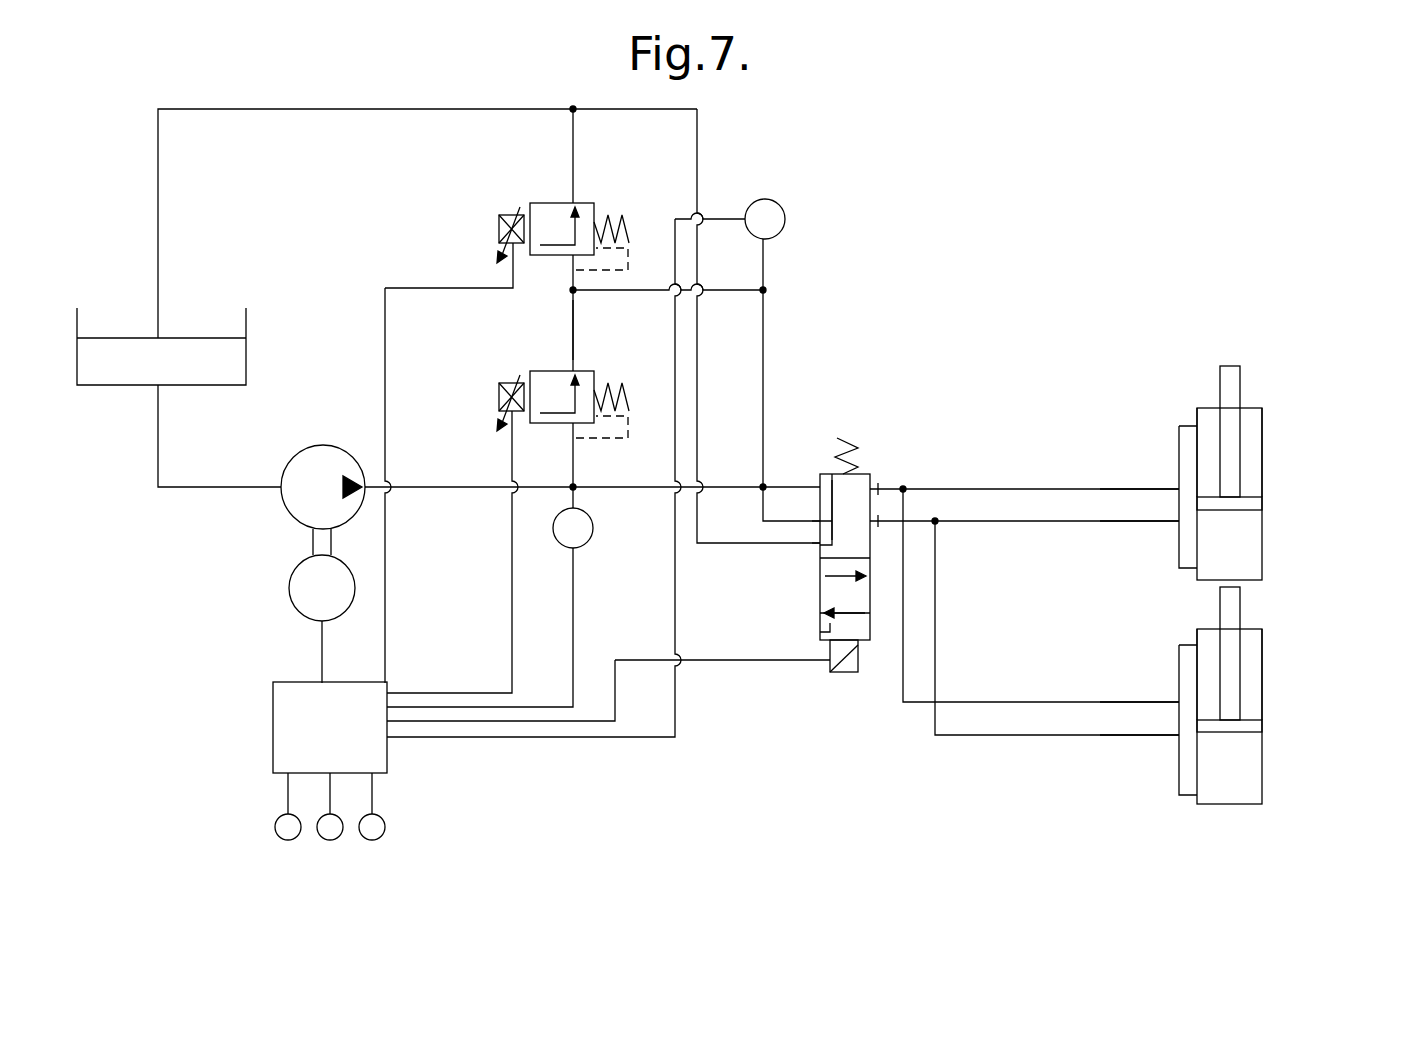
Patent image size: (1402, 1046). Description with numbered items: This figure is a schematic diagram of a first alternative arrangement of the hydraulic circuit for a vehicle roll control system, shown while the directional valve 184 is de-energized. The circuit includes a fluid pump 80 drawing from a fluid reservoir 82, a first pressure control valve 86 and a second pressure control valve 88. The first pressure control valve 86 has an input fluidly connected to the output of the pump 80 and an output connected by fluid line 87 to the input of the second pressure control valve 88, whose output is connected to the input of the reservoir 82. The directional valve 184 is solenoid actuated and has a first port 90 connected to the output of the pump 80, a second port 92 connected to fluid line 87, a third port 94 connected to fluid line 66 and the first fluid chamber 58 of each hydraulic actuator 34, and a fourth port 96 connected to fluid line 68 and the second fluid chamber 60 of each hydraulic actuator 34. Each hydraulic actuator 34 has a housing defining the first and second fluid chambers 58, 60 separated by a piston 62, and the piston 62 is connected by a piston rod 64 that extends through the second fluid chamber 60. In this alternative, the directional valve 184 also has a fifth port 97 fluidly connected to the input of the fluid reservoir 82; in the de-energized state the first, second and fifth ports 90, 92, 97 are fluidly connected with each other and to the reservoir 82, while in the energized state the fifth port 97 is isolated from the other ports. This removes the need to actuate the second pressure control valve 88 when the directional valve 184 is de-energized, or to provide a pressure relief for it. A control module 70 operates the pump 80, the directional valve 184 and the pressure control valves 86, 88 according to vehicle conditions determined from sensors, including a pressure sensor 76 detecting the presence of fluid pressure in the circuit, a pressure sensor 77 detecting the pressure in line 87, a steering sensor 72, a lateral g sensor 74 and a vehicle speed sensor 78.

The hydraulic actuator 34 is at (1290, 588).
The first fluid chamber 58 is at (1258, 560).
The second fluid chamber 60 is at (1258, 446).
The piston 62 is at (1258, 503).
The piston rod 64 is at (1238, 388).
The fluid line 66 is at (1138, 527).
The fluid line 68 is at (1133, 484).
The control module 70 is at (283, 723).
The steering sensor 72 is at (276, 822).
The lateral g sensor 74 is at (324, 832).
The pressure sensor 76 is at (593, 528).
The pressure sensor 77 is at (765, 199).
The vehicle speed sensor 78 is at (370, 833).
The fluid pump 80 is at (297, 521).
The fluid reservoir 82 is at (117, 366).
The first pressure control valve 86 is at (584, 371).
The fluid line 87 is at (573, 331).
The second pressure control valve 88 is at (584, 203).
The first port 90 is at (865, 535).
The second port 92 is at (818, 528).
The third port 94 is at (879, 524).
The fourth port 96 is at (879, 484).
The fifth port 97 is at (815, 548).
The directional valve 184 is at (880, 460).